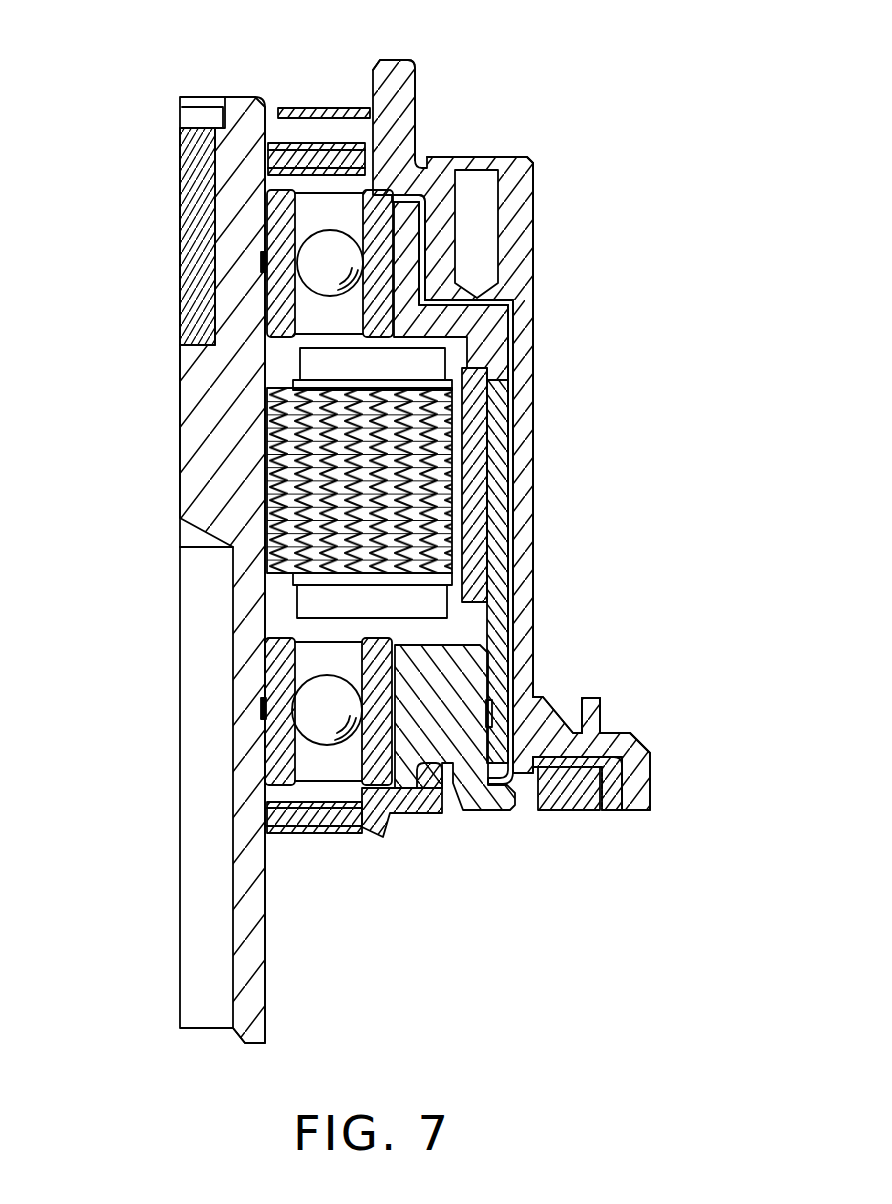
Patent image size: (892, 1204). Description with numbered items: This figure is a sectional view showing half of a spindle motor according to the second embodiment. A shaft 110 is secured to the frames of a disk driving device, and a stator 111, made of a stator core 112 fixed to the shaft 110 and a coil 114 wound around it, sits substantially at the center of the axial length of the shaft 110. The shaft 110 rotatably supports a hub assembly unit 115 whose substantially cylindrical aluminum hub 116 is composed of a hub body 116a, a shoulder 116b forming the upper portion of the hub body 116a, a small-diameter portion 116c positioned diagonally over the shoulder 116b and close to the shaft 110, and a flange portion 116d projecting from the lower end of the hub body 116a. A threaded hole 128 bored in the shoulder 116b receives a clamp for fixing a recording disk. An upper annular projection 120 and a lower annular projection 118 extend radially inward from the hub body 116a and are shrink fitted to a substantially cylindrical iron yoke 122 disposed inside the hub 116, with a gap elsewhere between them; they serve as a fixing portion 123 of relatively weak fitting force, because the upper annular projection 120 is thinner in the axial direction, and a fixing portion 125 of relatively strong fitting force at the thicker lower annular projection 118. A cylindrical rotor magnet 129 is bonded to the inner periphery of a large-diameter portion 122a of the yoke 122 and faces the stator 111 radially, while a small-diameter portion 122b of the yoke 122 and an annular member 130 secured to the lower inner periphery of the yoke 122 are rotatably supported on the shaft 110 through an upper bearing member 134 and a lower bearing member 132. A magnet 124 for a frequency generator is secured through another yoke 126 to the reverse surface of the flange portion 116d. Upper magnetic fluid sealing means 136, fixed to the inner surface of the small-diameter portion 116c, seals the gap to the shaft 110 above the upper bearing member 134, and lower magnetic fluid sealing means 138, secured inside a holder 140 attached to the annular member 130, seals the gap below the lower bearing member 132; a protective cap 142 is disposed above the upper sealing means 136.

The shaft 110 is at (200, 445).
The stator 111 is at (455, 352).
The stator core 112 is at (265, 555).
The coil 114 is at (300, 610).
The hub assembly unit 115 is at (550, 166).
The hub 116 is at (535, 282).
The hub body 116a is at (523, 475).
The shoulder 116b is at (525, 205).
The small-diameter portion 116c is at (421, 165).
The flange portion 116d is at (618, 736).
The lower annular projection 118 is at (518, 724).
The upper annular projection 120 is at (482, 380).
The yoke 122 is at (513, 612).
The large-diameter portion 122a is at (512, 506).
The small-diameter portion 122b is at (422, 211).
The fixing portion 123 is at (500, 432).
The magnet 124 is at (560, 800).
The fixing portion 125 is at (516, 680).
The yoke 126 is at (610, 815).
The threaded hole 128 is at (478, 177).
The rotor magnet 129 is at (512, 397).
The annular member 130 is at (468, 752).
The lower bearing member 132 is at (275, 745).
The upper bearing member 134 is at (305, 215).
The upper magnetic fluid sealing means 136 is at (301, 138).
The lower magnetic fluid sealing means 138 is at (325, 838).
The holder 140 is at (410, 802).
The protective cap 142 is at (341, 108).